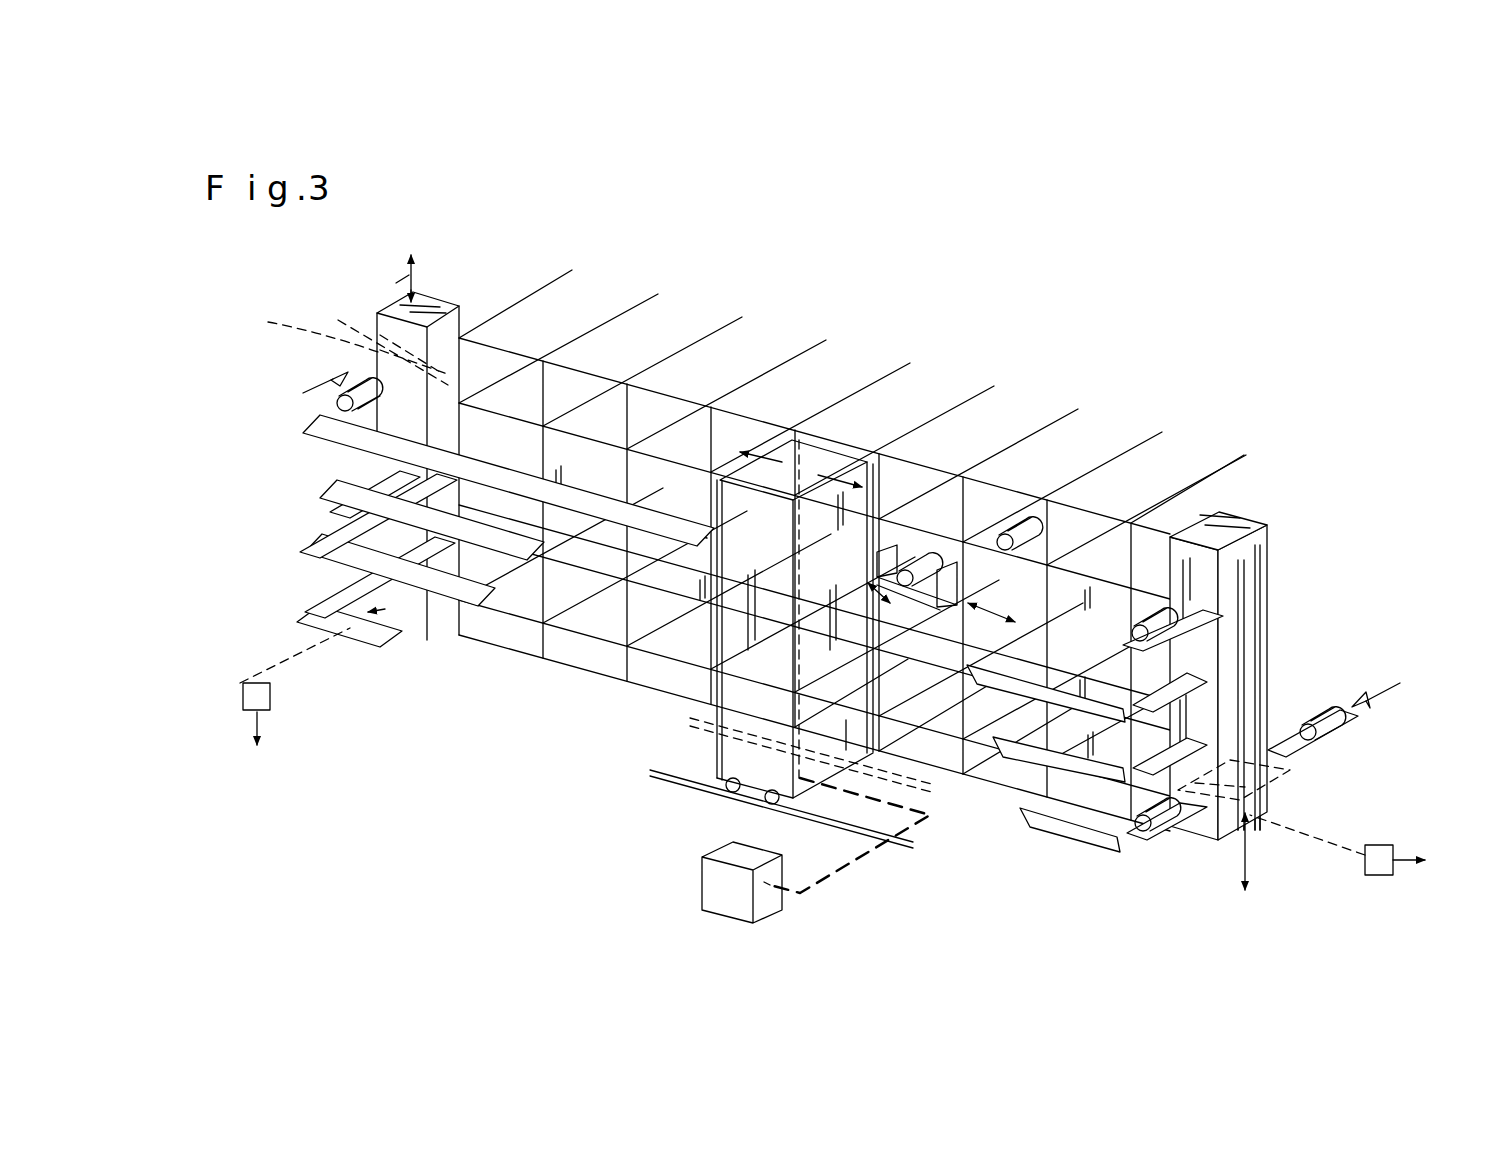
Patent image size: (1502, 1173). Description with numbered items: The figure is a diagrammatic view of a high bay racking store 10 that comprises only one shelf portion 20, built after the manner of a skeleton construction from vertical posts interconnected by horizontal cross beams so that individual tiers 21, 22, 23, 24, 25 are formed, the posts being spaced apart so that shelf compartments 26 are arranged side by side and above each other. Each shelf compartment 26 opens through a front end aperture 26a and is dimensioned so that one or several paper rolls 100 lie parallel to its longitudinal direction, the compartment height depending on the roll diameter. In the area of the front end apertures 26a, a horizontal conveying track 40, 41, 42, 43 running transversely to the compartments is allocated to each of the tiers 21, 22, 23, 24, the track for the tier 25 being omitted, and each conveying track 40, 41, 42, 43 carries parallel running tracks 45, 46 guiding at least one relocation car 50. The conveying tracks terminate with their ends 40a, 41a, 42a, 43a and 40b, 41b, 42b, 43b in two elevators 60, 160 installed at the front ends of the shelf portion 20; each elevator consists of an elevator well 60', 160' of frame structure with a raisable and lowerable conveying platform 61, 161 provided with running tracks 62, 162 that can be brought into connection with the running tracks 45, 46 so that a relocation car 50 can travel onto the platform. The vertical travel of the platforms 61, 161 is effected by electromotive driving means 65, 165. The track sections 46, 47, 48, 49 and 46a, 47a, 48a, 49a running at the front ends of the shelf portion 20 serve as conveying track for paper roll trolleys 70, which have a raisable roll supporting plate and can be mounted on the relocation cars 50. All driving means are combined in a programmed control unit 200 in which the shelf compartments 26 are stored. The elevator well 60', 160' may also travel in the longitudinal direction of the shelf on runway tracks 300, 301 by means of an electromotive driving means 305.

The high bay racking store 10 is at (1110, 333).
The shelf portion 20 is at (490, 318).
The tier 21 is at (655, 692).
The tier 22 is at (692, 665).
The tier 23 is at (655, 565).
The tier 24 is at (600, 490).
The tier 25 is at (680, 513).
The shelf compartment 26 is at (527, 413).
The front end aperture 26a is at (580, 620).
The conveying track 40 is at (362, 650).
The end of conveying track 40a is at (310, 610).
The end of conveying track 40b is at (1120, 853).
The conveying track 41 is at (447, 600).
The end of conveying track 41a is at (305, 553).
The end of conveying track 41b is at (1112, 782).
The conveying track 42 is at (540, 555).
The end of conveying track 42a is at (315, 498).
The end of conveying track 42b is at (1021, 810).
The conveying track 43 is at (338, 457).
The end of conveying track 43a is at (318, 426).
The end of conveying track 43b is at (1225, 548).
The running track 45 is at (652, 505).
The running track / conveying track section 46 is at (688, 505).
The conveying track section 46a is at (340, 590).
The conveying track section 47 is at (1255, 720).
The conveying track section 47a is at (318, 540).
The conveying track section 48 is at (1262, 660).
The conveying track section 48a is at (325, 512).
The conveying track section 49 is at (1265, 592).
The conveying track section 49a is at (330, 393).
The relocation car 50 is at (950, 585).
The elevator 60 is at (1026, 565).
The elevator well 60' is at (1091, 478).
The conveying platform 61 is at (1270, 810).
The running tracks of conveying platform 62 is at (1243, 786).
The driving means 65 is at (1378, 845).
The paper roll trolley 70 is at (918, 600).
The paper roll 100 is at (905, 565).
The elevator 160 is at (842, 416).
The elevator well 160' is at (381, 661).
The conveying platform 161 is at (307, 319).
The running tracks of conveying platform 162 is at (378, 335).
The driving means 165 is at (243, 697).
The programmed control unit 200 is at (851, 795).
The runway track 300 is at (825, 824).
The runway track 301 is at (925, 778).
The electromotive driving means 305 is at (712, 893).